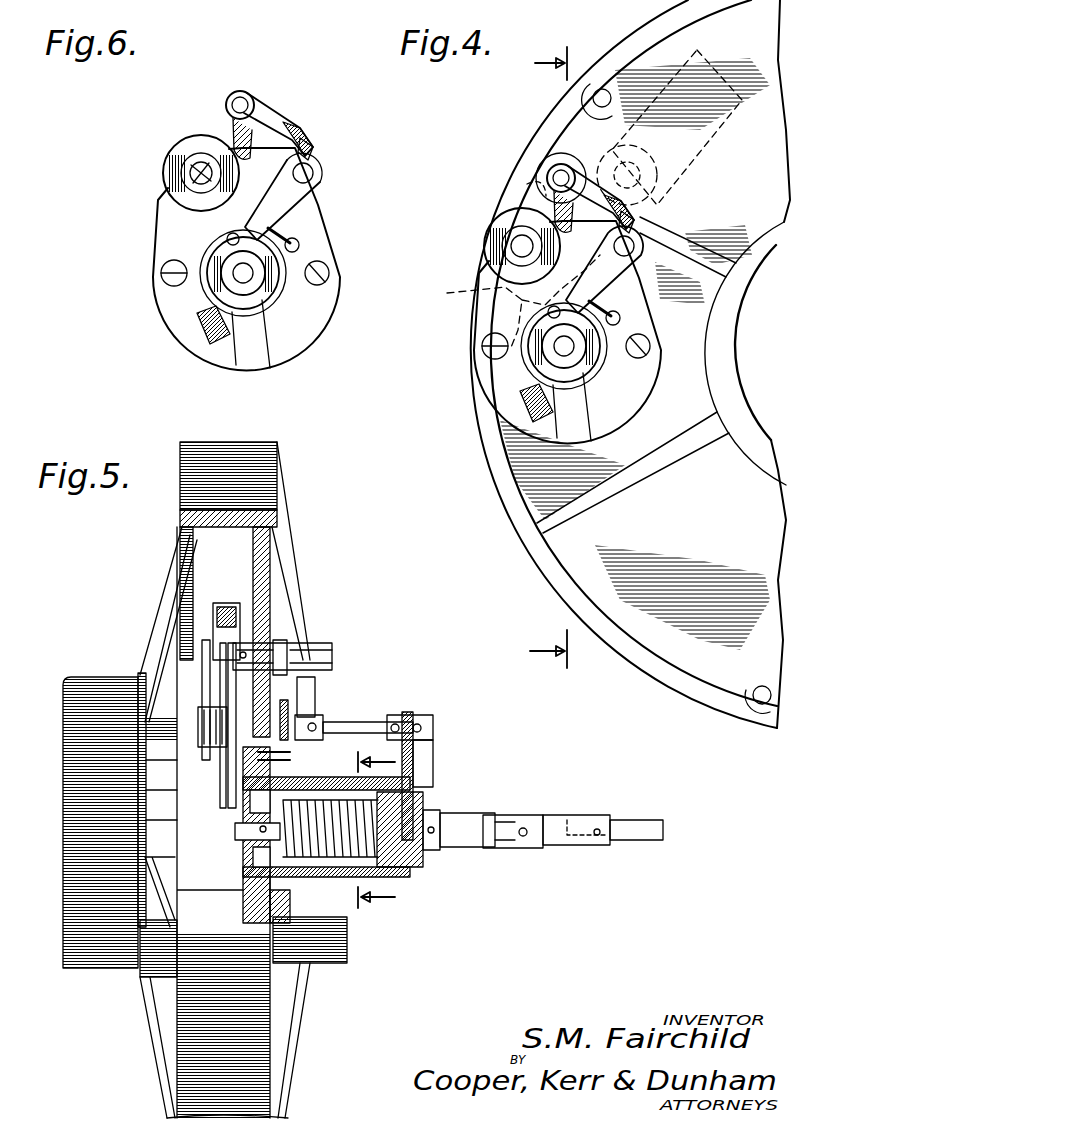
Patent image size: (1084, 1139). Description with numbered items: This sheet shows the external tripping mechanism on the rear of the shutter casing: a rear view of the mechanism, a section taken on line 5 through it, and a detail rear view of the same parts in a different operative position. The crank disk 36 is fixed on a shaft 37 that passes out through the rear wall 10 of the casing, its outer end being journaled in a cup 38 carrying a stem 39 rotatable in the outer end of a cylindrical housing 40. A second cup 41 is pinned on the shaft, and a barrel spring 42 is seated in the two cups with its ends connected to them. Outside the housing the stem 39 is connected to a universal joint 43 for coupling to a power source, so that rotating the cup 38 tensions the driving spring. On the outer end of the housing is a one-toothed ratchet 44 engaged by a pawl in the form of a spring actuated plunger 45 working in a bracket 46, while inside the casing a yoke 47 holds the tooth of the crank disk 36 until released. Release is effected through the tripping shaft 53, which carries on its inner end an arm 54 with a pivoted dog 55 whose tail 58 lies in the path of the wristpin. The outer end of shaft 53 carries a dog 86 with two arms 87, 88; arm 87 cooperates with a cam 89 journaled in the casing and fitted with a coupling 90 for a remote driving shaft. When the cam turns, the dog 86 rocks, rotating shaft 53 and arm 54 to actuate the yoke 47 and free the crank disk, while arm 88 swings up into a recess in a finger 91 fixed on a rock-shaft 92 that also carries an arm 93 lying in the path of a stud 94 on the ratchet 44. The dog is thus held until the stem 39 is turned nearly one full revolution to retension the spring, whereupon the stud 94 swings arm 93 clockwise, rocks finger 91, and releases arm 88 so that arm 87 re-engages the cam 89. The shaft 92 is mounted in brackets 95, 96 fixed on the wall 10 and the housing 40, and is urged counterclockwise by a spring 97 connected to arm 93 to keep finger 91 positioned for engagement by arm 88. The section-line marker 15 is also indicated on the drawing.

In FIG. 4, the section line 5— 5 is at (556, 357).
In FIG. 4, the rear wall 10 is at (568, 570).
In FIG. 5, the rear wall 10 is at (270, 558).
In FIG. 5, the section line 15- 15 is at (376, 830).
In FIG. 5, the crank disk 36 is at (253, 852).
In FIG. 5, the shaft 37 is at (245, 829).
In FIG. 5, the cup 38 is at (400, 873).
In FIG. 6, the stem 39 is at (258, 276).
In FIG. 5, the stem 39 is at (423, 852).
In FIG. 5, the cylindrical housing 40 is at (385, 872).
In FIG. 5, the cup 41 is at (240, 882).
In FIG. 5, the barrel spring 42 is at (345, 800).
In FIG. 5, the universal joint 43 is at (562, 825).
In FIG. 6, the one-toothed ratchet 44 is at (258, 308).
In FIG. 4, the one-toothed ratchet 44 is at (578, 355).
In FIG. 5, the one-toothed ratchet 44 is at (420, 866).
In FIG. 6, the spring actuated plunger 45 is at (200, 311).
In FIG. 4, the spring actuated plunger 45 is at (567, 332).
In FIG. 6, the bracket 46 is at (240, 350).
In FIG. 4, the bracket 46 is at (546, 408).
In FIG. 4, the yoke 47 is at (655, 195).
In FIG. 6, the tripping shaft 53 is at (252, 100).
In FIG. 4, the tripping shaft 53 is at (562, 190).
In FIG. 4, the arm 54 is at (527, 186).
In FIG. 4, the dog 55 is at (520, 302).
In FIG. 5, the tail 58 is at (273, 630).
In FIG. 6, the dog 86 is at (238, 103).
In FIG. 4, the dog 86 is at (541, 165).
In FIG. 5, the dog 86 is at (318, 655).
In FIG. 6, the arm 87 is at (236, 130).
In FIG. 4, the arm 87 is at (550, 211).
In FIG. 5, the arm 87 is at (305, 690).
In FIG. 6, the arm 88 is at (290, 125).
In FIG. 4, the arm 88 is at (606, 212).
In FIG. 6, the cam 89 is at (180, 160).
In FIG. 4, the cam 89 is at (504, 246).
In FIG. 6, the coupling 90 is at (200, 173).
In FIG. 6, the finger 91 is at (311, 152).
In FIG. 4, the finger 91 is at (648, 218).
In FIG. 5, the finger 91 is at (330, 714).
In FIG. 6, the rock-shaft 92 is at (312, 172).
In FIG. 4, the rock-shaft 92 is at (645, 263).
In FIG. 5, the rock-shaft 92 is at (360, 722).
In FIG. 6, the arm 93 is at (285, 212).
In FIG. 4, the arm 93 is at (625, 277).
In FIG. 5, the arm 93 is at (428, 757).
In FIG. 6, the stud 94 is at (227, 240).
In FIG. 4, the stud 94 is at (575, 319).
In FIG. 5, the bracket 95 is at (300, 745).
In FIG. 6, the bracket 96 is at (298, 200).
In FIG. 5, the bracket 96 is at (415, 718).
In FIG. 6, the spring 97 is at (300, 243).
In FIG. 4, the spring 97 is at (604, 313).
In FIG. 5, the spring 97 is at (425, 795).